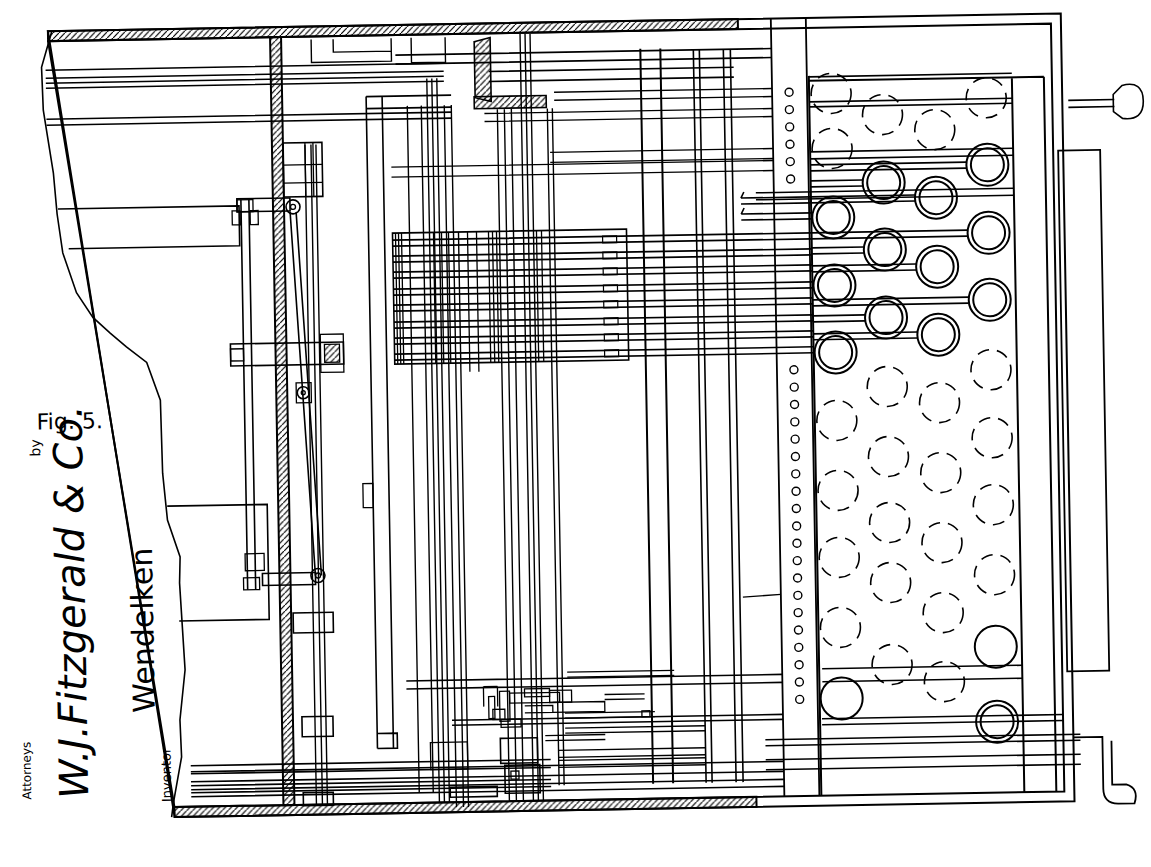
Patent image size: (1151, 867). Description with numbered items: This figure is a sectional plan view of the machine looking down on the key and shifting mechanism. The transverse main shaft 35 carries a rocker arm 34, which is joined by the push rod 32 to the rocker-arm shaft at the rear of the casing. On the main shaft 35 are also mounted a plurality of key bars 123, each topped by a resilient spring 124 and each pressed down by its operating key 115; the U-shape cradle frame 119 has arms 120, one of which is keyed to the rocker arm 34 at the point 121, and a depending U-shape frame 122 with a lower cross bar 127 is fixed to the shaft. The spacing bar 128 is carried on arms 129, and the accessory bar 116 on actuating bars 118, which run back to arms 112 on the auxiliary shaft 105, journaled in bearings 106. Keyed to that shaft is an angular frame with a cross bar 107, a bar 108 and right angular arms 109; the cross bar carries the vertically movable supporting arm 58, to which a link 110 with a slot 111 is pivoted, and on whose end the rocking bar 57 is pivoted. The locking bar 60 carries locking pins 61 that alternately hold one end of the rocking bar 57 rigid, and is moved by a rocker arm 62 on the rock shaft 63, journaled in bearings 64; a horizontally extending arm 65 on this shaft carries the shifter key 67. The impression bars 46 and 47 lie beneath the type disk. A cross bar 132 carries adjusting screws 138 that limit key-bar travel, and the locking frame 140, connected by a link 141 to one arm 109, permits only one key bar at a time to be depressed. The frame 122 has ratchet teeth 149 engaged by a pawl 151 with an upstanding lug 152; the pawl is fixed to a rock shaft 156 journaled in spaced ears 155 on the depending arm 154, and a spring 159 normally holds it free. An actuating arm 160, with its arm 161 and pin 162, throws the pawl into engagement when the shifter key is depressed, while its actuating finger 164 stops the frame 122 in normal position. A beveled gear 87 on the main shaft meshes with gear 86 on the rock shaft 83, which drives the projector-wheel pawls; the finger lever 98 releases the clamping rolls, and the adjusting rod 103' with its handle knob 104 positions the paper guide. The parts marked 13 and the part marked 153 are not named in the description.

The pin 13 is at (484, 704).
The push rod 32 is at (371, 785).
The rocker arm 34 is at (540, 785).
The main shaft 35 is at (515, 568).
The impression bar 46 is at (133, 200).
The impression bar 47 is at (200, 499).
The rocking bar 57 is at (243, 297).
The vertically movable supporting arm 58 is at (312, 392).
The locking bar 60 is at (312, 458).
The locking pins 61 is at (262, 193).
The rocker arm 62 is at (308, 204).
The rock shaft 63 is at (314, 243).
The bearings 64 is at (328, 622).
The horizontally extending arm 65 is at (606, 770).
The shifter key 67 is at (992, 752).
The rock shaft 83 is at (181, 68).
The beveled gear 86 is at (492, 110).
The gear 87 is at (547, 108).
The finger lever 98 is at (1102, 805).
The adjusting rod 103' is at (584, 128).
The handle knob 104 is at (1122, 92).
The auxiliary shaft 105 is at (402, 48).
The bearings 106 is at (364, 499).
The cross bar 107 is at (378, 181).
The bar 108 is at (455, 506).
The right angular arms 109 is at (403, 100).
The link 110 is at (332, 336).
The slot 111 is at (335, 350).
The arms 112 is at (477, 362).
The operating key 115 is at (997, 228).
The accessory bar 116 is at (1092, 496).
The actuating bars 118 is at (590, 665).
The cradle frame 119 is at (648, 500).
The arms 120 is at (600, 62).
The keyed connection 121 is at (508, 768).
The U-shape frame 122 is at (557, 472).
The key bars 123 is at (745, 205).
The resilient spring 124 is at (640, 233).
The lower cross bar 127 is at (557, 550).
The spacing bar 128 is at (1042, 403).
The arms 129 is at (887, 81).
The cross bar 132 is at (777, 600).
The adjusting screws 138 is at (793, 438).
The locking frame 140 is at (687, 64).
The link 141 is at (684, 765).
The ratchet teeth 149 is at (520, 765).
The pawl 151 is at (540, 698).
The upstanding lug 152 is at (535, 707).
The link 153 is at (487, 698).
The arm 154 is at (545, 706).
The spaced ears 155 is at (496, 722).
The rock shaft 156 is at (543, 690).
The spring 159 is at (558, 735).
The actuating arm 160 is at (640, 705).
The arm 161 is at (488, 713).
The pin 162 is at (498, 690).
The actuating finger 164 is at (548, 700).